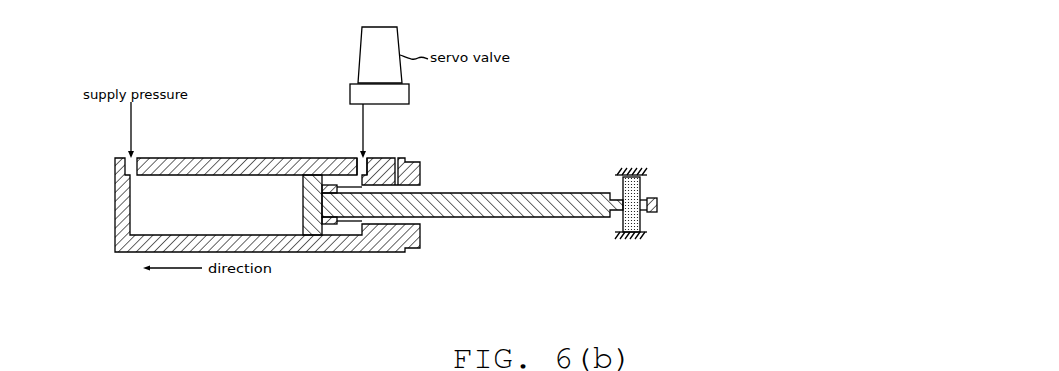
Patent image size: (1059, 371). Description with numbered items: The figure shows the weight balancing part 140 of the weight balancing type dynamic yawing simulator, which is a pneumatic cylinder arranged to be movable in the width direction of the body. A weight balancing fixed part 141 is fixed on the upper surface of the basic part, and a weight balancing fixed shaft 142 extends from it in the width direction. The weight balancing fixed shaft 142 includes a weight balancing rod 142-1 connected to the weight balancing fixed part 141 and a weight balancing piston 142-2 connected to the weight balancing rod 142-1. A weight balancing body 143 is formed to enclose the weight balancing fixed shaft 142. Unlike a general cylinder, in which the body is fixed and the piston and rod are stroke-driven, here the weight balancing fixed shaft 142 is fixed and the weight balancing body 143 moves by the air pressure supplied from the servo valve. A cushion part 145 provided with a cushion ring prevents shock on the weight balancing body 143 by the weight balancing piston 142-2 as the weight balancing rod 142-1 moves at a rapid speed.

The weight balancing part 140 is at (319, 133).
The weight balancing fixed part 141 is at (633, 185).
The weight balancing fixed shaft 142 is at (459, 252).
The weight balancing rod 142-1 is at (472, 239).
The weight balancing piston 142-2 is at (302, 212).
The weight balancing body 143 is at (198, 160).
The cushion part 145 is at (338, 157).